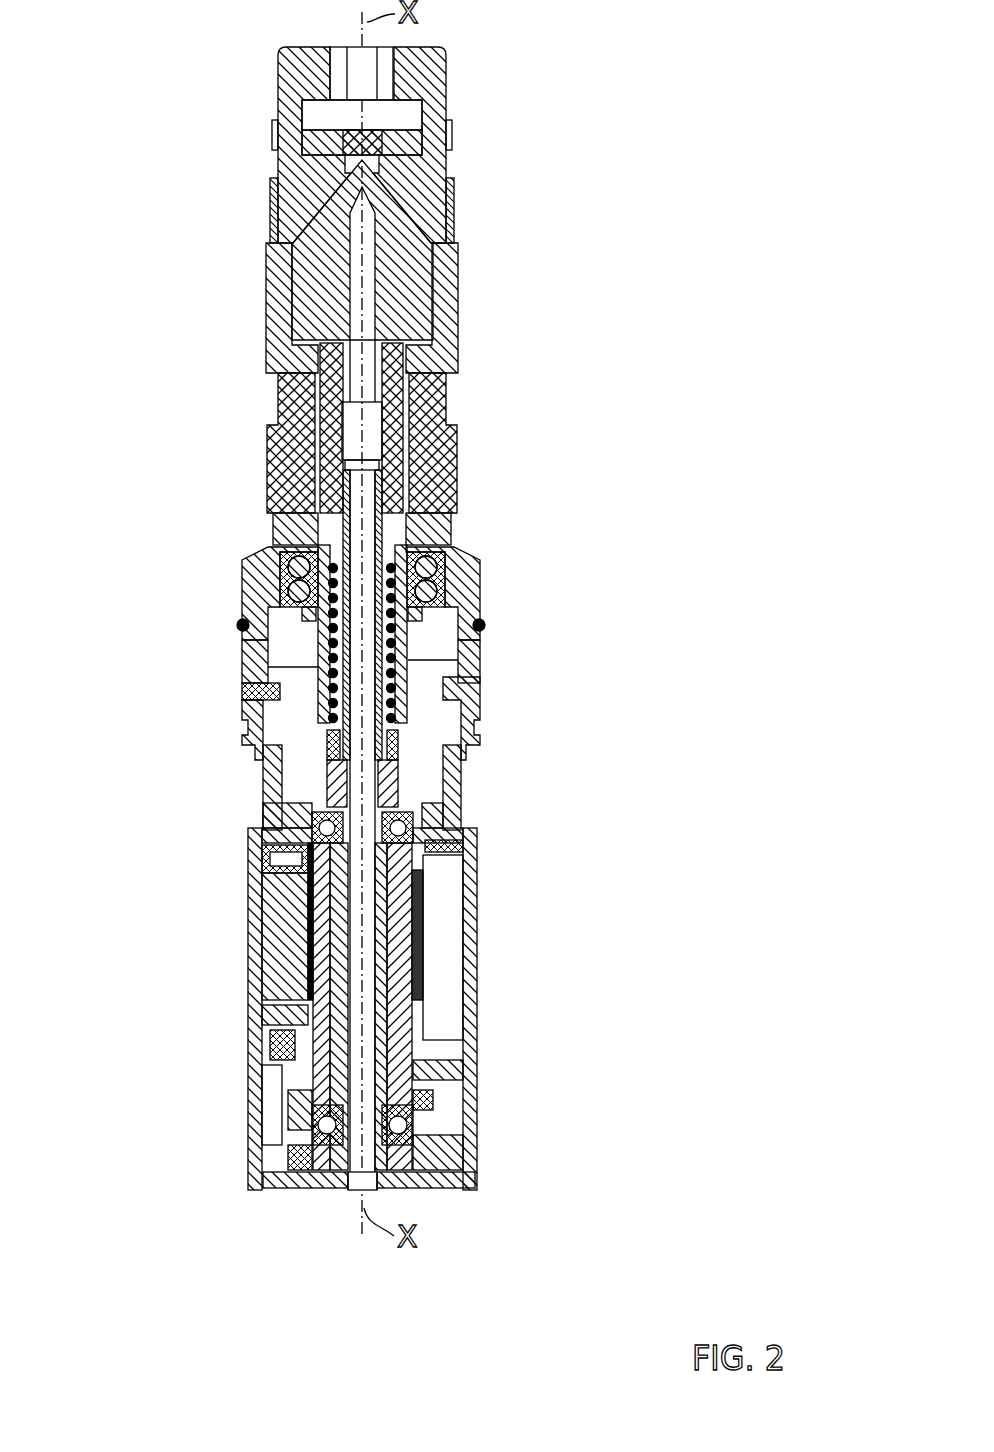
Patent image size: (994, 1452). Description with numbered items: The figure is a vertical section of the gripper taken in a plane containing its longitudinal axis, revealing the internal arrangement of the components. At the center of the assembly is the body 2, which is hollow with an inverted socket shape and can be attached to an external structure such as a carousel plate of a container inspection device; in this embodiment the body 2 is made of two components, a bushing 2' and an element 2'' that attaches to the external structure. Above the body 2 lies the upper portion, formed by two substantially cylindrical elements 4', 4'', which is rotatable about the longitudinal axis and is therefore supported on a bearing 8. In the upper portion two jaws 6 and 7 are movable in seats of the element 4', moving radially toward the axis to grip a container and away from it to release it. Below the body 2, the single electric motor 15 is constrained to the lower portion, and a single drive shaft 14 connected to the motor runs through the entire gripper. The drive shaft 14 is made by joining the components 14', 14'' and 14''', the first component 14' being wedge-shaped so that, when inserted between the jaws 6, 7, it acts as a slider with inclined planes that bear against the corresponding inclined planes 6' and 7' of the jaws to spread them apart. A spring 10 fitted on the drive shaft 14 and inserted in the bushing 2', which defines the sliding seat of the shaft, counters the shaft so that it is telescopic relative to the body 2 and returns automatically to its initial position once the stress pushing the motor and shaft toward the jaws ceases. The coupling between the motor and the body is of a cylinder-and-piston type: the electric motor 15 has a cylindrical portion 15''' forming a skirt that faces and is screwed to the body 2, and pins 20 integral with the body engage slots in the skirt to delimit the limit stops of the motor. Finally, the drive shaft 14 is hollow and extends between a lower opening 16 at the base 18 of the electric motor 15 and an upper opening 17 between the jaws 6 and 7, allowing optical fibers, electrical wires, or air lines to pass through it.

The body 2 is at (289, 653).
The bushing 2' is at (312, 700).
The element 2'' is at (312, 593).
The cylindrical element 4' is at (275, 308).
The cylindrical element 4'' is at (275, 443).
The jaw 6 is at (222, 145).
The inclined plane 6' is at (188, 210).
The jaw 7 is at (495, 145).
The inclined plane 7' is at (534, 210).
The bearing 8 is at (250, 577).
The spring 10 is at (410, 672).
The drive shaft 14 is at (468, 643).
The wedge-shaped component 14' is at (452, 259).
The drive shaft component 14'' is at (469, 428).
The drive shaft component 14''' is at (451, 533).
The electric motor 15 is at (286, 1001).
The cylindrical portion 15''' is at (446, 790).
The lower opening 16 is at (355, 1190).
The upper opening 17 is at (357, 93).
The base 18 is at (452, 1188).
The pin 20 is at (243, 707).